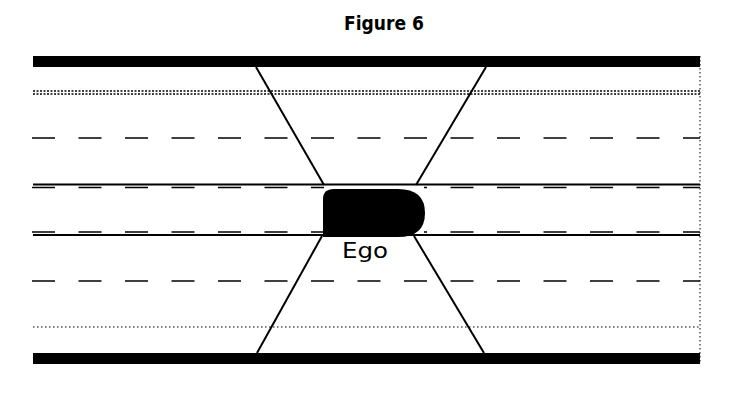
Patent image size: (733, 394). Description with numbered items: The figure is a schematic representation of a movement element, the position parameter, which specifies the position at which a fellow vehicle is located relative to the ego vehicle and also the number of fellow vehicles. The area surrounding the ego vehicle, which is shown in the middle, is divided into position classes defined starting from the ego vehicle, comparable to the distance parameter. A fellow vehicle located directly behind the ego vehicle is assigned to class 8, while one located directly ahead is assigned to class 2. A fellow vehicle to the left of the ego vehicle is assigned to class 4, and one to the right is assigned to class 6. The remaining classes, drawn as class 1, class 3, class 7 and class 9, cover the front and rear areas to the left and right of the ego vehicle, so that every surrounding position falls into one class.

The position class 1 is at (572, 137).
The position class 2 is at (562, 210).
The position class 3 is at (570, 280).
The position class 4 is at (370, 137).
The position class 6 is at (369, 280).
The position class 7 is at (164, 137).
The position class 8 is at (178, 210).
The position class 9 is at (165, 280).